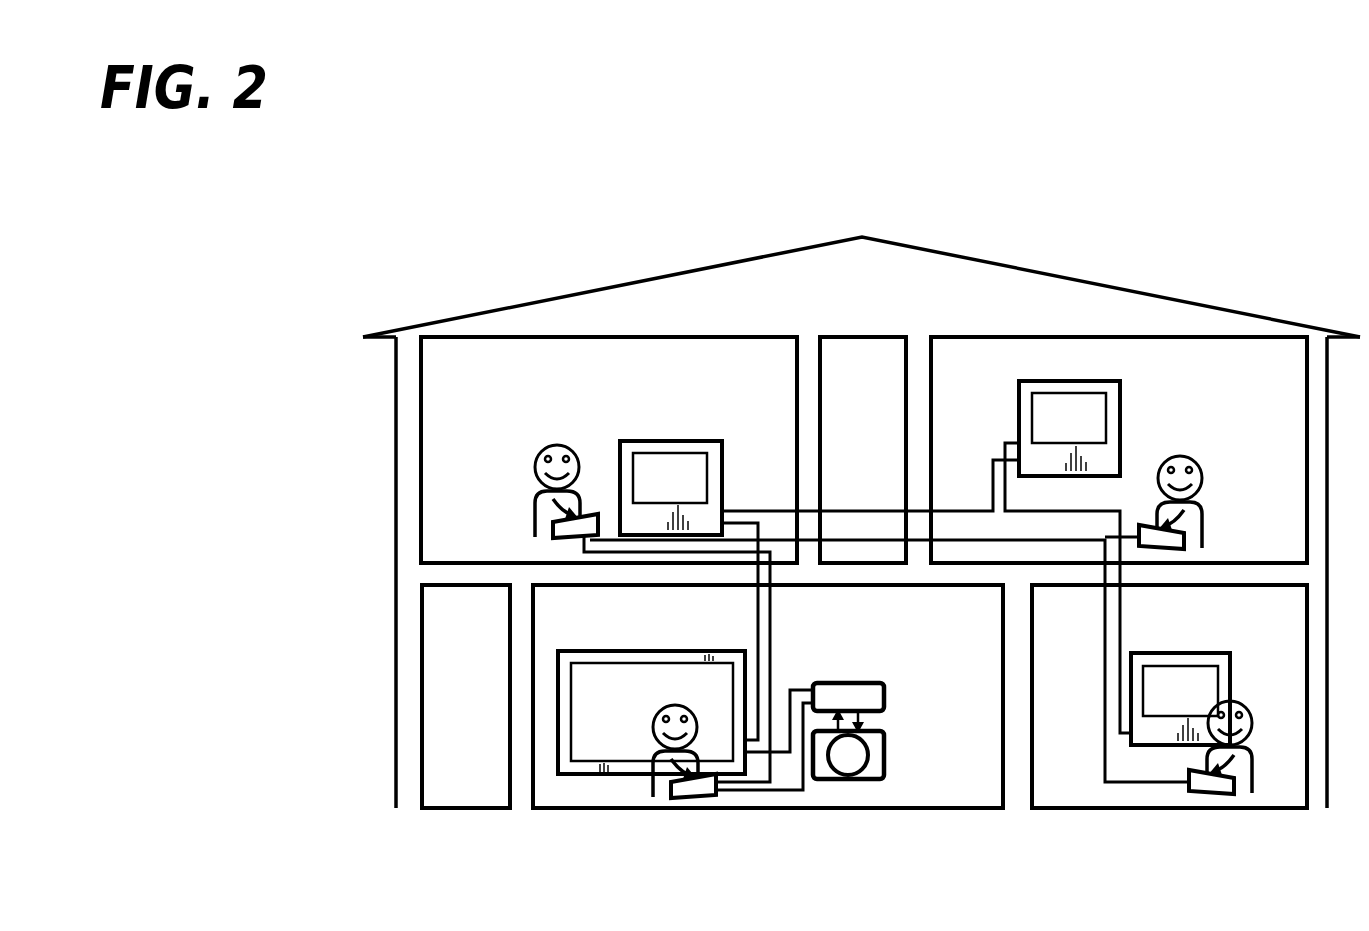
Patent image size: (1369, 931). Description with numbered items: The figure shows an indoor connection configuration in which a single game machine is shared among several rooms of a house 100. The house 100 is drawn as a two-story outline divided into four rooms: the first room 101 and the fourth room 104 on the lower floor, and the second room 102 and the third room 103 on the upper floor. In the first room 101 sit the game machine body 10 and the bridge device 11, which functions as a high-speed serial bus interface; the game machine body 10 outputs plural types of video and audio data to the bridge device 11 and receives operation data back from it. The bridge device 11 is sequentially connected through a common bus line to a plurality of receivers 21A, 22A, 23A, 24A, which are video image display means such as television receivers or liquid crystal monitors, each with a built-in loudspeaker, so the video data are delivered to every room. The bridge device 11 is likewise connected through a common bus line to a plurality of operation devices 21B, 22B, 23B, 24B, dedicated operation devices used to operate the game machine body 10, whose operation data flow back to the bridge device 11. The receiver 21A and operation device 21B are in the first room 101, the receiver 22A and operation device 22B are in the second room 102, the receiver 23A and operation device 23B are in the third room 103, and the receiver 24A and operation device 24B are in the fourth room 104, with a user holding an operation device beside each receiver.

The house 100 is at (1055, 275).
The first room 101 is at (845, 808).
The second room 102 is at (680, 337).
The third room 103 is at (1093, 337).
The fourth room 104 is at (1072, 808).
The game machine body 10 is at (884, 757).
The bridge device 11 is at (884, 700).
The receiver 21A is at (697, 630).
The operation device 21B is at (692, 800).
The receiver 22A is at (708, 441).
The operation device 22B is at (598, 512).
The receiver 23A is at (1120, 398).
The operation device 23B is at (1143, 528).
The receiver 24A is at (1218, 652).
The operation device 24B is at (1190, 776).